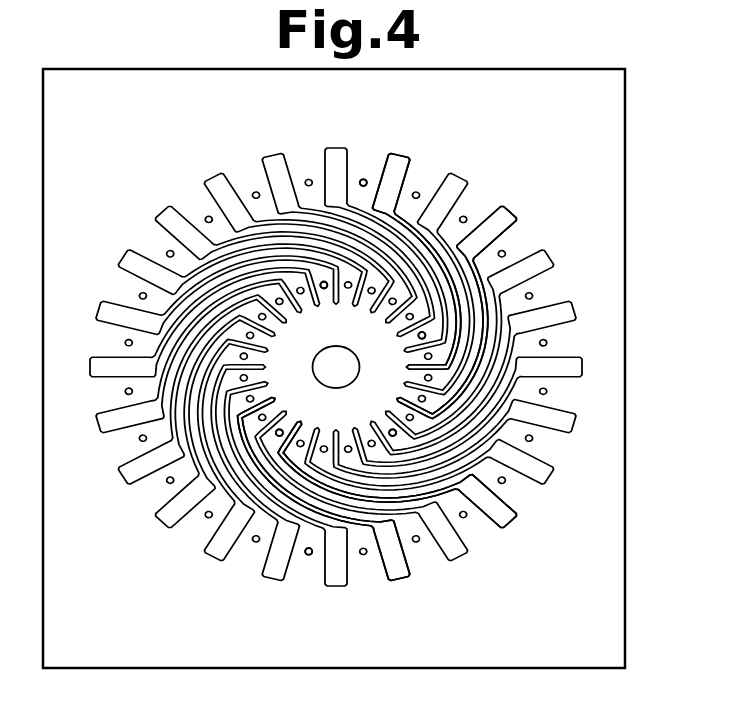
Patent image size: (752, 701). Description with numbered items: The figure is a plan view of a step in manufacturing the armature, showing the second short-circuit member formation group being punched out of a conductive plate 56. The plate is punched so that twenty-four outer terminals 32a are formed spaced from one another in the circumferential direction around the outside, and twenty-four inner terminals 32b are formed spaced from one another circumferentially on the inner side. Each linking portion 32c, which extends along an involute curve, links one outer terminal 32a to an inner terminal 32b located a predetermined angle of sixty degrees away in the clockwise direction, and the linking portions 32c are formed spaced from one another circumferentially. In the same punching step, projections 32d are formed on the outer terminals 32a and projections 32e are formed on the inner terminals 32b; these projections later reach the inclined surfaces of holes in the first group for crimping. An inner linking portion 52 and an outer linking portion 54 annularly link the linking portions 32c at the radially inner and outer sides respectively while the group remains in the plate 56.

The outer terminal 32a is at (476, 217).
The inner terminal 32b is at (320, 290).
The linking portion 32c is at (407, 233).
The projection 32d is at (363, 179).
The projection 32e is at (418, 335).
The inner linking portion 52 is at (370, 429).
The outer linking portion 54 is at (579, 150).
The conductive plate 56 is at (626, 118).